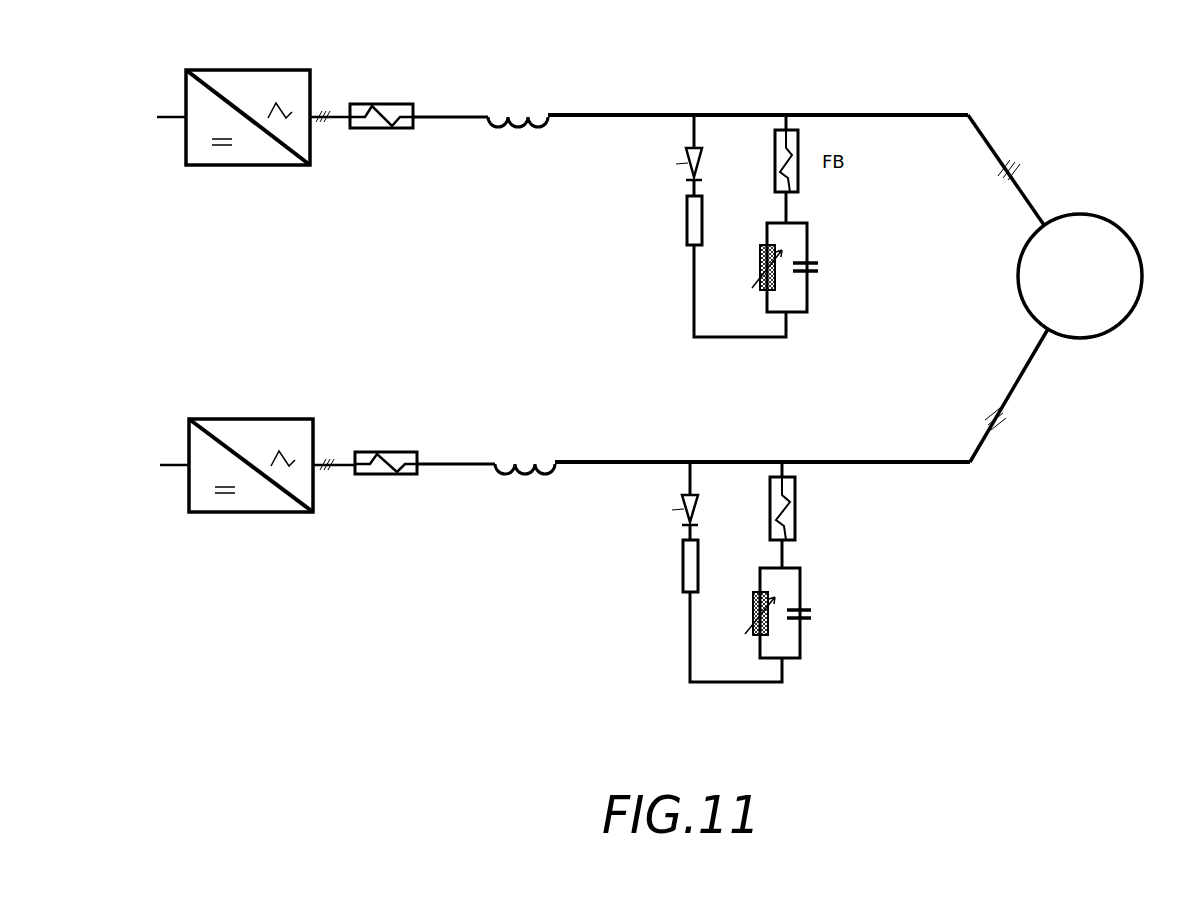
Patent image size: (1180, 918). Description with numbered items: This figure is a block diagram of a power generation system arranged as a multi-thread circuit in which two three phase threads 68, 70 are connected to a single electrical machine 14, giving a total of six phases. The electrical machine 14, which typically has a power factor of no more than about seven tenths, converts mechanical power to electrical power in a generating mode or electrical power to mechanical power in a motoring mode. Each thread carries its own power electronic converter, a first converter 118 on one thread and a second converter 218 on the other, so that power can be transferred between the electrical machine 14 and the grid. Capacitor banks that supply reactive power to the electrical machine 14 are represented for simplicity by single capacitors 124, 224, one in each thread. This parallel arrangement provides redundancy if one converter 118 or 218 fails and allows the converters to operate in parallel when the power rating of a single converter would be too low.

The electrical machine 14 is at (1110, 305).
The three phase thread 68 is at (908, 113).
The three phase thread 70 is at (928, 463).
The converter 118 is at (310, 165).
The capacitor 124 is at (810, 275).
The converter 218 is at (313, 512).
The capacitor 224 is at (806, 620).